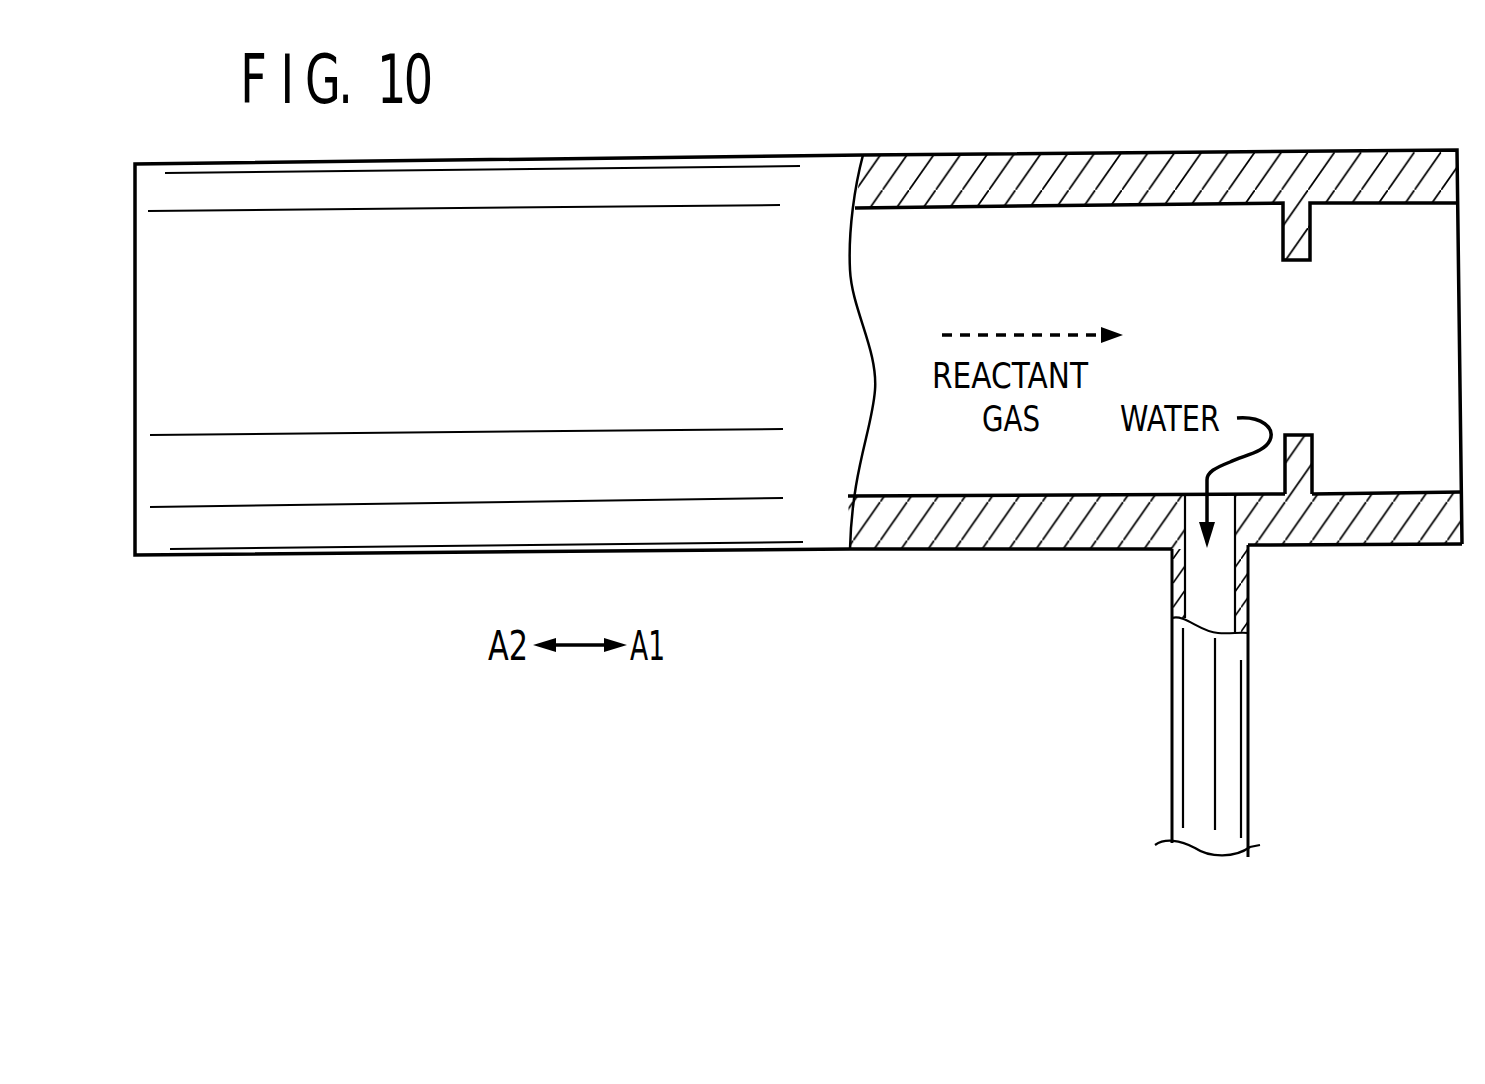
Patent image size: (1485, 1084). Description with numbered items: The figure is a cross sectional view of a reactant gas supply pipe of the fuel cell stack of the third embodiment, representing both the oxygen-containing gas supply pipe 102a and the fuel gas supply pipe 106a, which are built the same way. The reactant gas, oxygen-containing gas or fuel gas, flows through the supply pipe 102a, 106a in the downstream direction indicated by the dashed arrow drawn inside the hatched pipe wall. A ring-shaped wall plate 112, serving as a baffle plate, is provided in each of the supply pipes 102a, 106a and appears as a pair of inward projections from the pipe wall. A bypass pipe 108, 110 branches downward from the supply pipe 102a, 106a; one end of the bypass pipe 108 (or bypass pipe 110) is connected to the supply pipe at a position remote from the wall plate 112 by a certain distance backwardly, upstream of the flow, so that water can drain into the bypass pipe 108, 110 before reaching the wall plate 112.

The oxygen-containing gas supply pipe 102a is at (1132, 312).
The fuel gas supply pipe 106a is at (1158, 347).
The ring-shaped wall plate 112 is at (1297, 450).
The bypass pipe 108 is at (1114, 676).
The bypass pipe 110 is at (1198, 683).